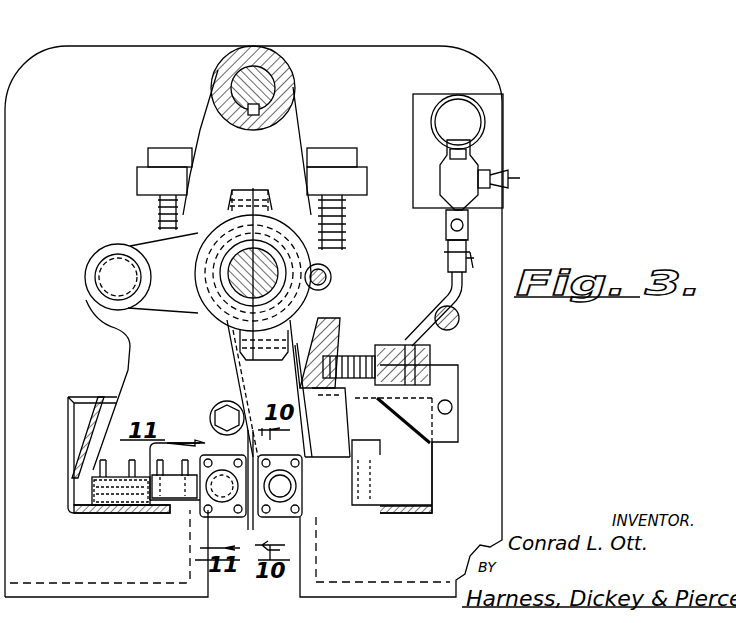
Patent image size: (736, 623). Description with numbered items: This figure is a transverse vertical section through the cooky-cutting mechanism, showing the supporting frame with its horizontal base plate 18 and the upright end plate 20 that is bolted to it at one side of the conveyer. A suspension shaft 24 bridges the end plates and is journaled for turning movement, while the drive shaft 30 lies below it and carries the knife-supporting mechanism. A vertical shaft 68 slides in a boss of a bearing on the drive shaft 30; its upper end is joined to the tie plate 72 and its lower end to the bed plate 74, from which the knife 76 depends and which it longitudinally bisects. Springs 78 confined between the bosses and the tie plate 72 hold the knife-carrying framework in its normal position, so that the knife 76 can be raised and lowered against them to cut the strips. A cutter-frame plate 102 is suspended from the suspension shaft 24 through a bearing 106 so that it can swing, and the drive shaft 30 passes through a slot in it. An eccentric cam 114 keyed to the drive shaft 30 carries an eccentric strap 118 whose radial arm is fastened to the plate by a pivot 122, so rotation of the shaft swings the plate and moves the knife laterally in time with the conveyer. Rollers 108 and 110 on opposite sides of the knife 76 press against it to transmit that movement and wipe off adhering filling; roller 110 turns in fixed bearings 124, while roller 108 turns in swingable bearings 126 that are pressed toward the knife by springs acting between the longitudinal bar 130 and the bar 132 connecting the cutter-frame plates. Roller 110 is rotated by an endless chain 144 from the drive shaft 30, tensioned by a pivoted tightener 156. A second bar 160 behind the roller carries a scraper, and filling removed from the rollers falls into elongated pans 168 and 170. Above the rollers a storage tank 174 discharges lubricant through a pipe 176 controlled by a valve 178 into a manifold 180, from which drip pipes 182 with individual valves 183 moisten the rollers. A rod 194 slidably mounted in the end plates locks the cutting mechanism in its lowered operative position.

The base plate 18 is at (358, 597).
The end plate 20 is at (434, 46).
The suspension shaft 24 is at (270, 90).
The drive shaft 30 is at (212, 250).
The vertical shaft 68 is at (332, 270).
The tie plate 72 is at (140, 178).
The bed plate 74 is at (368, 457).
The knife 76 is at (255, 520).
The springs 78 is at (158, 203).
The cutter-frame plate 102 is at (288, 135).
The bearing 106 is at (292, 50).
The roller 108 is at (210, 500).
The roller 110 is at (290, 508).
The eccentric cam 114 is at (232, 212).
The eccentric strap 118 is at (285, 205).
The pivot 122 is at (97, 278).
The fixed bearings 124 is at (275, 462).
The swingable bearings 126 is at (210, 418).
The longitudinal bar 130 is at (165, 500).
The bar 132 is at (100, 505).
The endless chain 144 is at (235, 382).
The tightener 156 is at (328, 330).
The second bar 160 is at (352, 490).
The pan 168 is at (68, 468).
The pan 170 is at (432, 482).
The storage tank 174 is at (486, 135).
The pipe 176 is at (466, 165).
The valve 178 is at (438, 186).
The manifold 180 is at (470, 225).
The drip pipe 182 is at (458, 293).
The valve 183 is at (470, 250).
The rod 194 is at (460, 322).